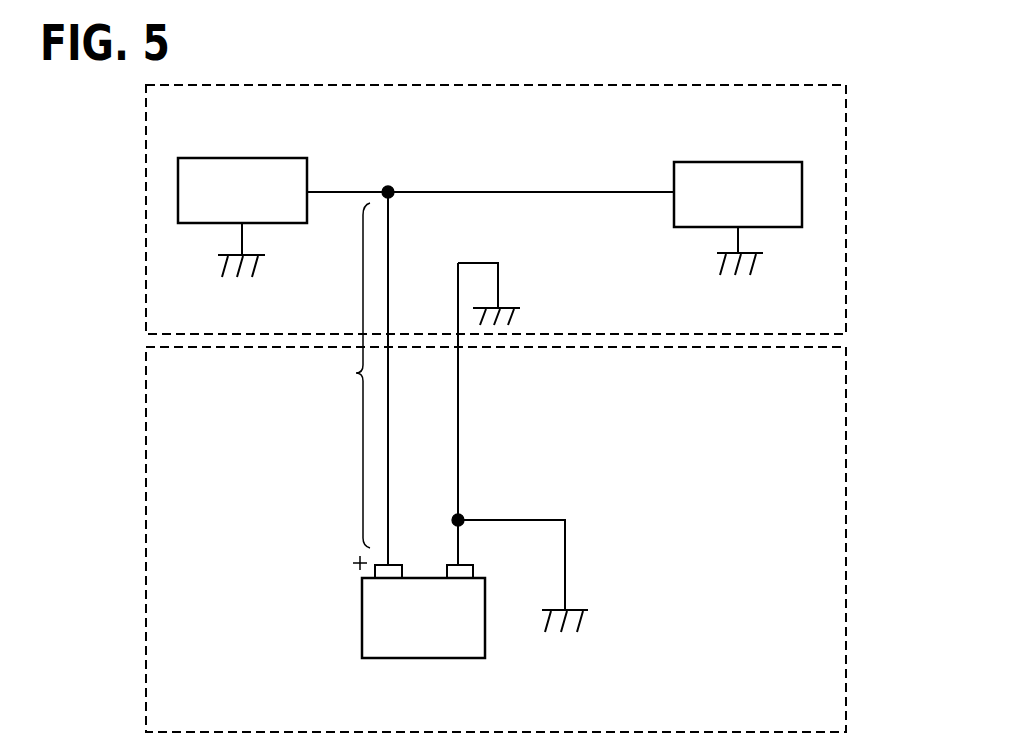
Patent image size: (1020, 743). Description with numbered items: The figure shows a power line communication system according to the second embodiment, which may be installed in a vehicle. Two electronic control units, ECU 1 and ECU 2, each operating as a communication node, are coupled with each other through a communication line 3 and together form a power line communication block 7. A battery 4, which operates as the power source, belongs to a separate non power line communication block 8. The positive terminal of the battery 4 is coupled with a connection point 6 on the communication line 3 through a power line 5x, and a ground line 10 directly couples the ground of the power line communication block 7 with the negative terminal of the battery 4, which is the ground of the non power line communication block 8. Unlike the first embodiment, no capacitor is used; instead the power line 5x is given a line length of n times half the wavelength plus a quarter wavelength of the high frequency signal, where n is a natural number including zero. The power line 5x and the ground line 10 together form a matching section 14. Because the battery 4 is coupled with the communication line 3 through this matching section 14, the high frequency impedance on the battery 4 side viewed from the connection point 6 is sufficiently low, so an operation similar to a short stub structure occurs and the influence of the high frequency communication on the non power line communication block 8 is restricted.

The electronic control unit 1 is at (233, 158).
The electronic control unit 2 is at (737, 162).
The communication line 3 is at (560, 193).
The battery 4 is at (362, 612).
The power line 5x is at (389, 513).
The connection point 6 is at (388, 184).
The power line communication block 7 is at (461, 85).
The non power line communication block 8 is at (846, 590).
The ground line 10 is at (458, 437).
The matching section 14 is at (329, 476).